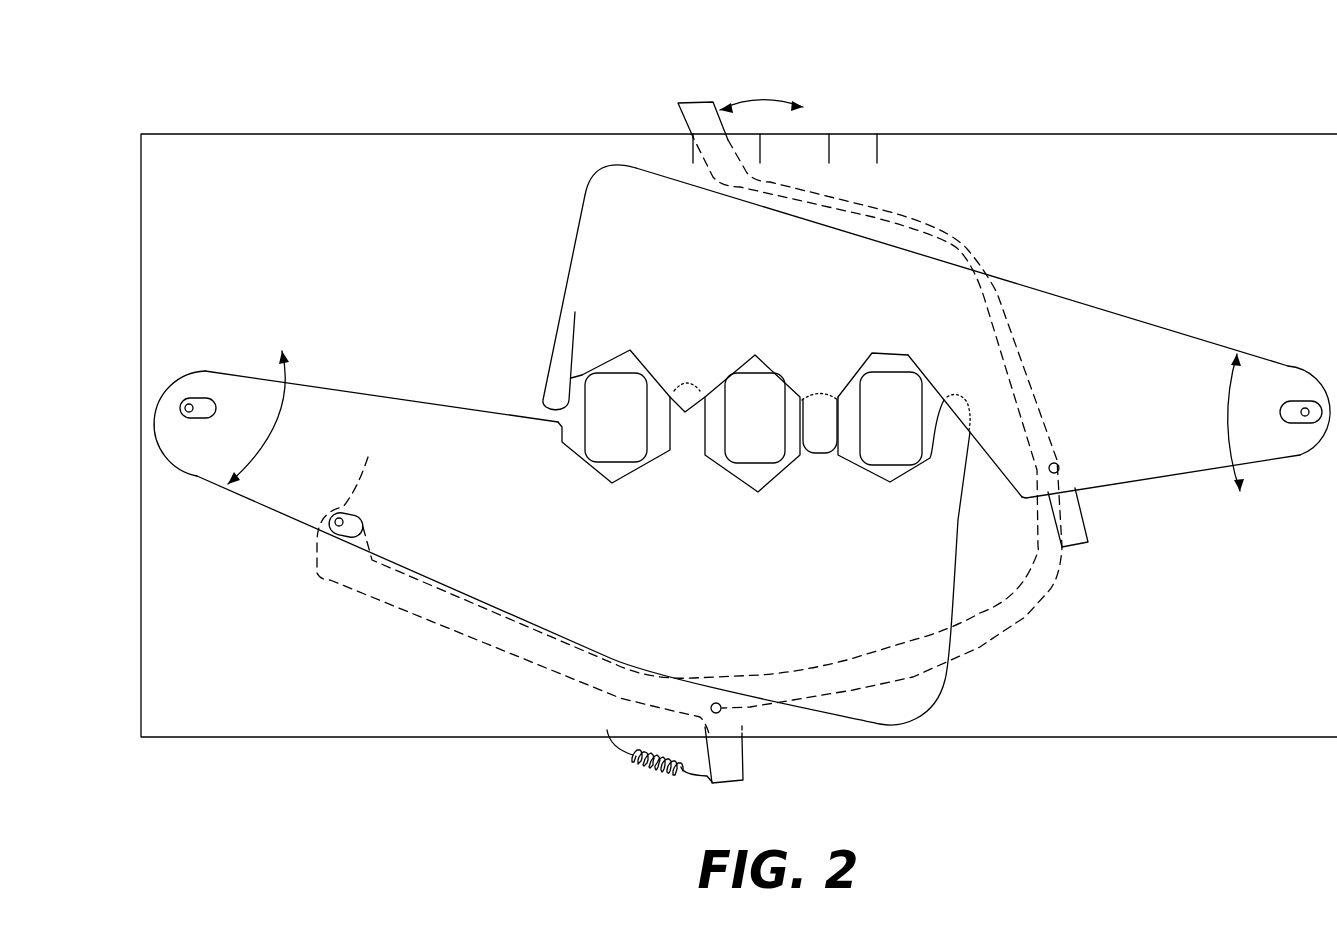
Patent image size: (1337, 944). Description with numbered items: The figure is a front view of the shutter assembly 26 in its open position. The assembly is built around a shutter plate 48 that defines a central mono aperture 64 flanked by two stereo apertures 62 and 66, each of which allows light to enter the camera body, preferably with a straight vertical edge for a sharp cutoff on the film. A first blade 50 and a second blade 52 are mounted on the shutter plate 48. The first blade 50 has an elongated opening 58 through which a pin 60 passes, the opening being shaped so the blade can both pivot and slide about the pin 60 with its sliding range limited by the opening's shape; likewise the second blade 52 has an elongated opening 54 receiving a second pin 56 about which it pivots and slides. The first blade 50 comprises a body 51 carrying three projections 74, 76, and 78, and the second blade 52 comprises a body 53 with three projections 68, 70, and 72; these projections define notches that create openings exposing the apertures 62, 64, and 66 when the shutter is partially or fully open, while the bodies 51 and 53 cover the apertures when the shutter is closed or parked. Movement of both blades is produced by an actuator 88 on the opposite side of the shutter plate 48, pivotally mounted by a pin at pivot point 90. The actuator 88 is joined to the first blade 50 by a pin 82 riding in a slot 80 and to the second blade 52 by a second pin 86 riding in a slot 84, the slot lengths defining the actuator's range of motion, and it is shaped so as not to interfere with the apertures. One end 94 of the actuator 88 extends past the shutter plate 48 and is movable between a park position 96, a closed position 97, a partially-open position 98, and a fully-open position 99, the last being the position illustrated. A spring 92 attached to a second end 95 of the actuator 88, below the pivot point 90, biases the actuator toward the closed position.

The shutter assembly 26 is at (447, 118).
The shutter plate 48 is at (992, 133).
The first blade 50 is at (902, 370).
The body of first blade 51 is at (1105, 337).
The second blade 52 is at (562, 541).
The body of second blade 53 is at (280, 507).
The elongated opening of second blade 54 is at (213, 400).
The second pin 56 is at (185, 420).
The elongated opening of first blade 58 is at (1278, 395).
The pin 60 is at (1317, 430).
The stereo aperture 62 is at (575, 312).
The mono aperture 64 is at (757, 372).
The stereo aperture 66 is at (913, 360).
The projection of second blade 68 is at (687, 440).
The projection of second blade 70 is at (822, 453).
The projection of second blade 72 is at (953, 440).
The projection of first blade 74 is at (547, 388).
The projection of first blade 76 is at (685, 372).
The projection of first blade 78 is at (823, 423).
The slot 80 is at (1088, 525).
The pin 82 is at (1060, 464).
The slot 84 is at (370, 458).
The second pin 86 is at (365, 520).
The actuator 88 is at (995, 254).
The pivot point 90 is at (722, 706).
The spring 92 is at (660, 770).
The end of actuator 94 is at (700, 112).
The second end of actuator 95 is at (743, 775).
The park position 96 is at (877, 150).
The closed position 97 is at (830, 152).
The partially-open position 98 is at (762, 152).
The fully-open position 99 is at (693, 158).